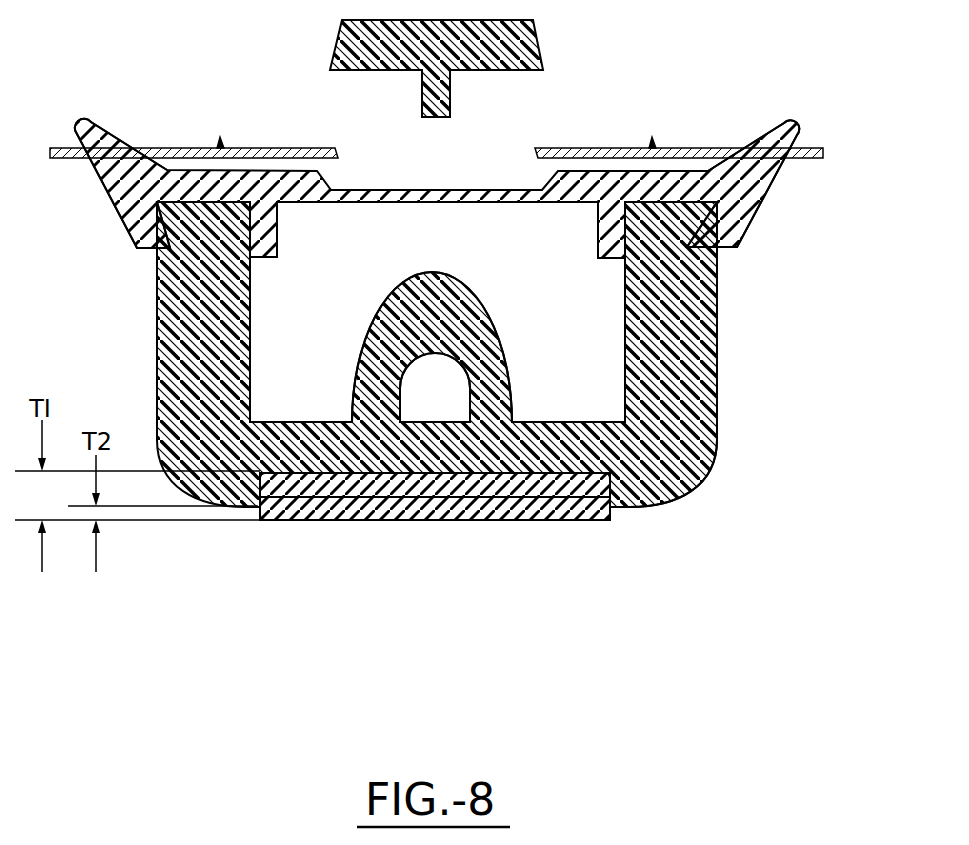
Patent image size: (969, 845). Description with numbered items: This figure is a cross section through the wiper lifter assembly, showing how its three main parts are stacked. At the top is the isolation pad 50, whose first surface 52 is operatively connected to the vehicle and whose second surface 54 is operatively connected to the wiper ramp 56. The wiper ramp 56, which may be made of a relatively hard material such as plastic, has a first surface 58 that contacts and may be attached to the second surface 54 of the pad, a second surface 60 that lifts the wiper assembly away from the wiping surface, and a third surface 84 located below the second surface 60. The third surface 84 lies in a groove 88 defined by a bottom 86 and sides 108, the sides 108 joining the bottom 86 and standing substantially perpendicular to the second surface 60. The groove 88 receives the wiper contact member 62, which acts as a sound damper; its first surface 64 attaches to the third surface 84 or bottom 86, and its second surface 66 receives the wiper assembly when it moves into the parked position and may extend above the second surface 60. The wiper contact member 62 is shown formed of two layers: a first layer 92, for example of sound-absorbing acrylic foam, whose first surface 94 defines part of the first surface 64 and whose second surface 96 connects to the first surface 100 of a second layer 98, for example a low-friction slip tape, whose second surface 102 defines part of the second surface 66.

The isolation pad 50 is at (436, 175).
The first surface 52 is at (177, 170).
The second surface 54 is at (212, 211).
The wiper ramp 56 is at (663, 340).
The first surface 58 is at (666, 222).
The second surface 60 is at (644, 512).
The wiper contact member 62 is at (473, 547).
The first surface 64 is at (556, 482).
The second surface 66 is at (340, 524).
The third surface 84 is at (570, 472).
The bottom 86 is at (313, 470).
The groove 88 is at (342, 440).
The first layer 92 is at (510, 486).
The second surface 96 is at (425, 517).
The first surface 94 is at (553, 478).
The second layer 98 is at (415, 554).
The first surface 100 is at (452, 521).
The second surface 102 is at (340, 524).
The sides 108 is at (257, 521).